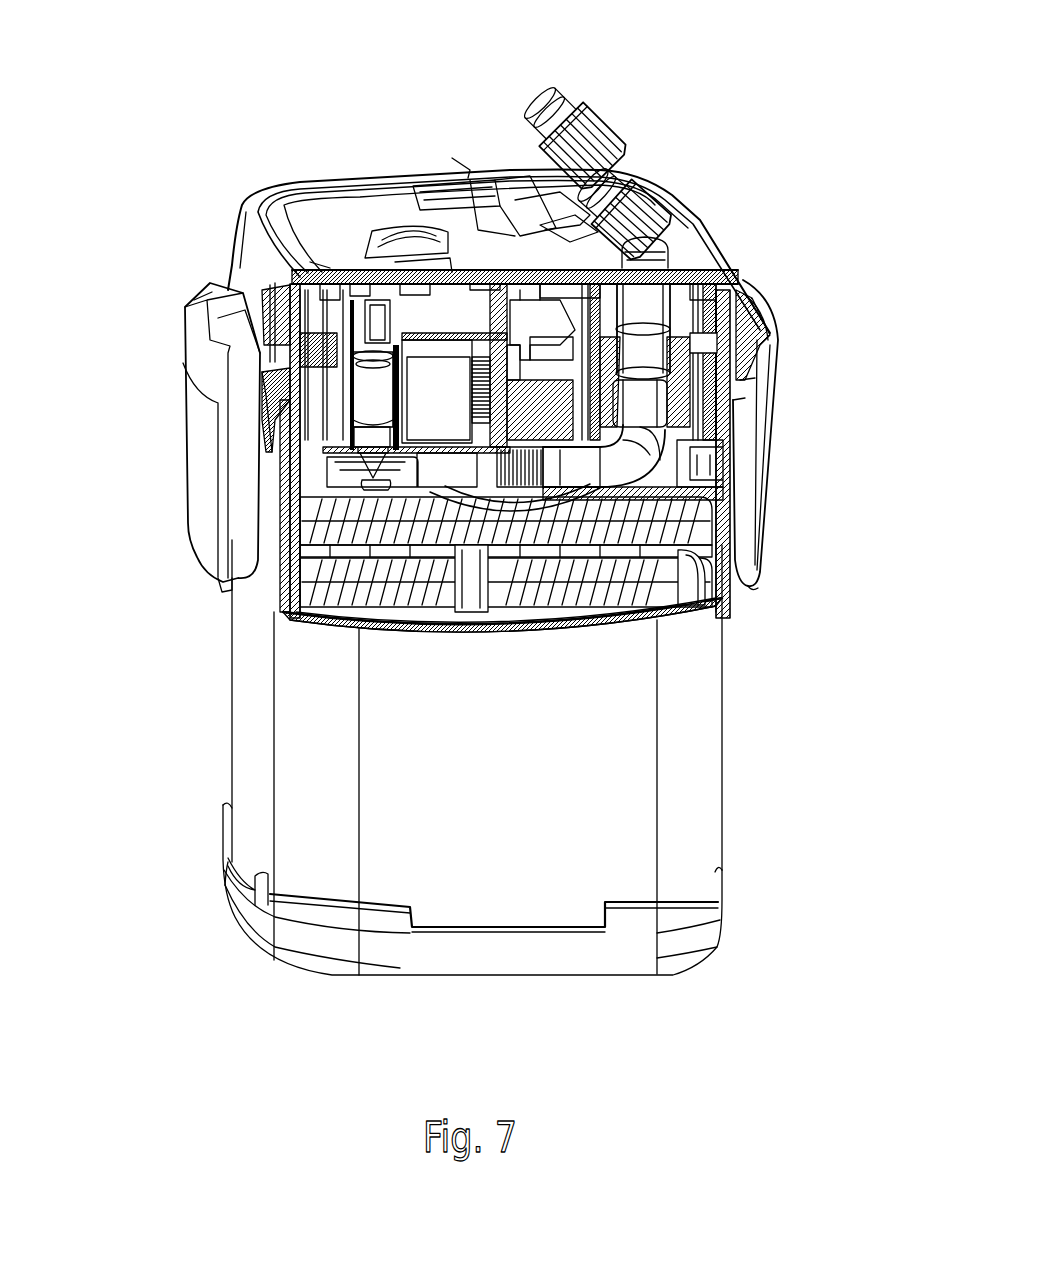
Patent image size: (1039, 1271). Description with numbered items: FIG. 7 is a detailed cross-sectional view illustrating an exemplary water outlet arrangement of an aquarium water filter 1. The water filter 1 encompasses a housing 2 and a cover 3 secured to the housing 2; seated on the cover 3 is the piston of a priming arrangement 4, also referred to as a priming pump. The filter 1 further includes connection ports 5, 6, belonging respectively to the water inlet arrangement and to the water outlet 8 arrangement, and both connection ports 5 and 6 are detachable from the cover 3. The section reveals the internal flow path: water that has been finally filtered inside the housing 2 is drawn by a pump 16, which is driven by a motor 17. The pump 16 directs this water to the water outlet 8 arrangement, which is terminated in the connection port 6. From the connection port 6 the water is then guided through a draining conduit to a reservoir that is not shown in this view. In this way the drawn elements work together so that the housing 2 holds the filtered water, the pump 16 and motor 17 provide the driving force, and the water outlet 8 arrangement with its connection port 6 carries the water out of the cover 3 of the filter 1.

The water filter 1 is at (220, 152).
The housing 2 is at (753, 805).
The cover 3 is at (770, 216).
The priming arrangement 4 is at (447, 153).
The connection port 5 is at (540, 88).
The connection port 6 is at (633, 190).
The water outlet arrangement 8 is at (763, 318).
The pump 16 is at (280, 432).
The motor 17 is at (290, 352).